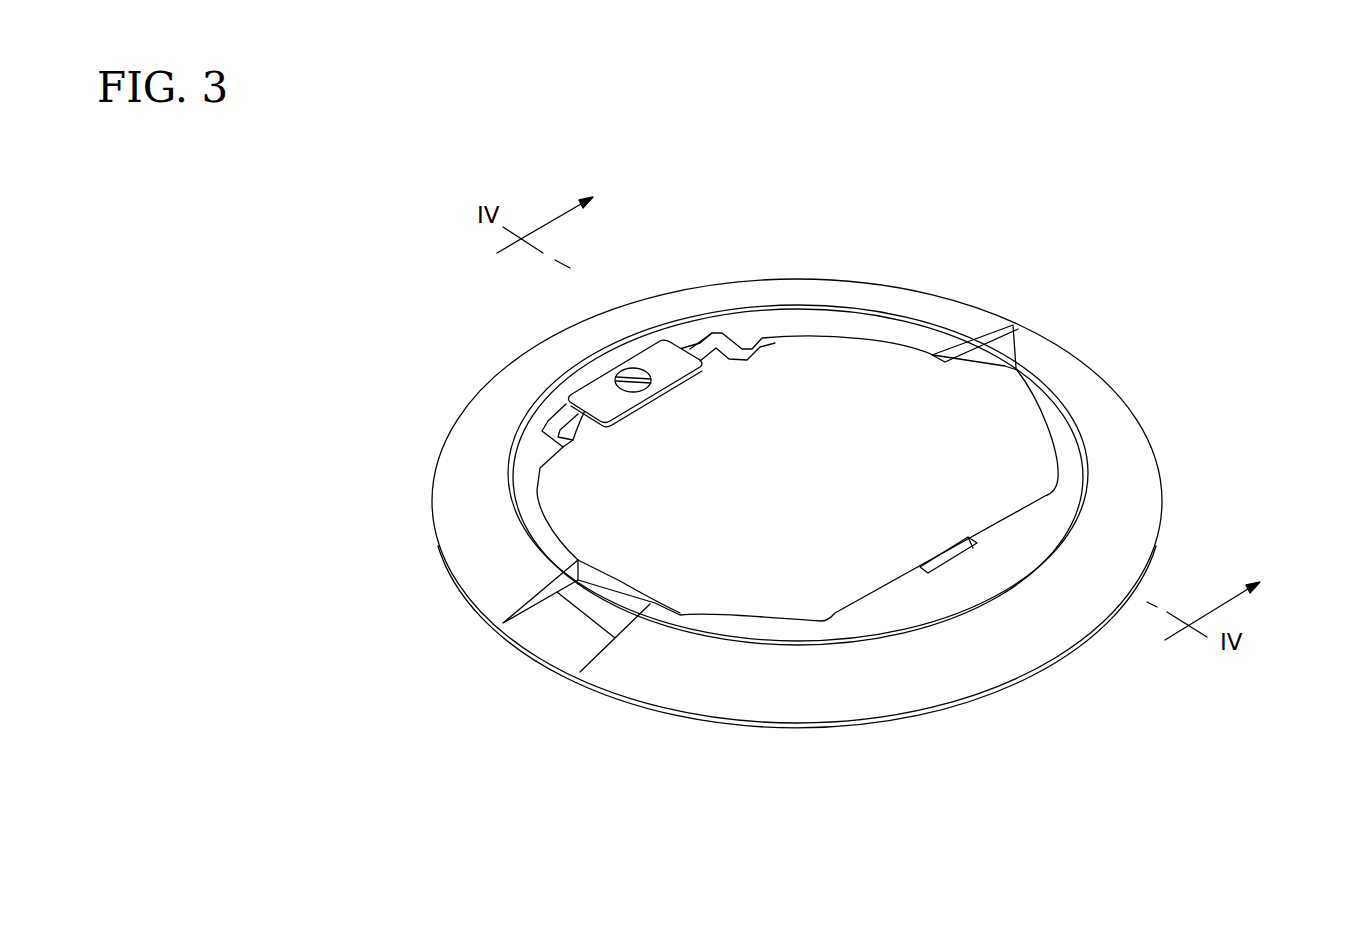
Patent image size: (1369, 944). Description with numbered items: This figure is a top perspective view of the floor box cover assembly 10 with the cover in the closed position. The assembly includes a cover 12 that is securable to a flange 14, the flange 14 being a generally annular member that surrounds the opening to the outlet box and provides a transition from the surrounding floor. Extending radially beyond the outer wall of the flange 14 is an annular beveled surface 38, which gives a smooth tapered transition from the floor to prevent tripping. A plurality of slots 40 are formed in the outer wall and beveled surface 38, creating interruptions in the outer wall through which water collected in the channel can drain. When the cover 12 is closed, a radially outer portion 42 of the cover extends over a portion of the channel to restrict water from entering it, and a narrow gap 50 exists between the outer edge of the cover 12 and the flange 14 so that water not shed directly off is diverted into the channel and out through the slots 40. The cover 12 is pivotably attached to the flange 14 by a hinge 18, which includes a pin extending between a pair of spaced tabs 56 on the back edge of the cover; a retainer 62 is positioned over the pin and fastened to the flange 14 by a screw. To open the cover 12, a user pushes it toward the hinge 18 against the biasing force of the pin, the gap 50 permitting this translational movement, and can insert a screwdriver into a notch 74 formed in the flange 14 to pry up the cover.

The floor box cover assembly 10 is at (880, 514).
The cover 12 is at (1088, 372).
The flange 14 is at (1147, 434).
The hinge 18 is at (529, 300).
The beveled surface 38 is at (823, 685).
The slots 40 is at (1017, 347).
The radially outer portion 42 is at (607, 584).
The gap 50 is at (762, 338).
The tabs 56 is at (712, 333).
The retainer 62 is at (601, 375).
The notch 74 is at (943, 558).